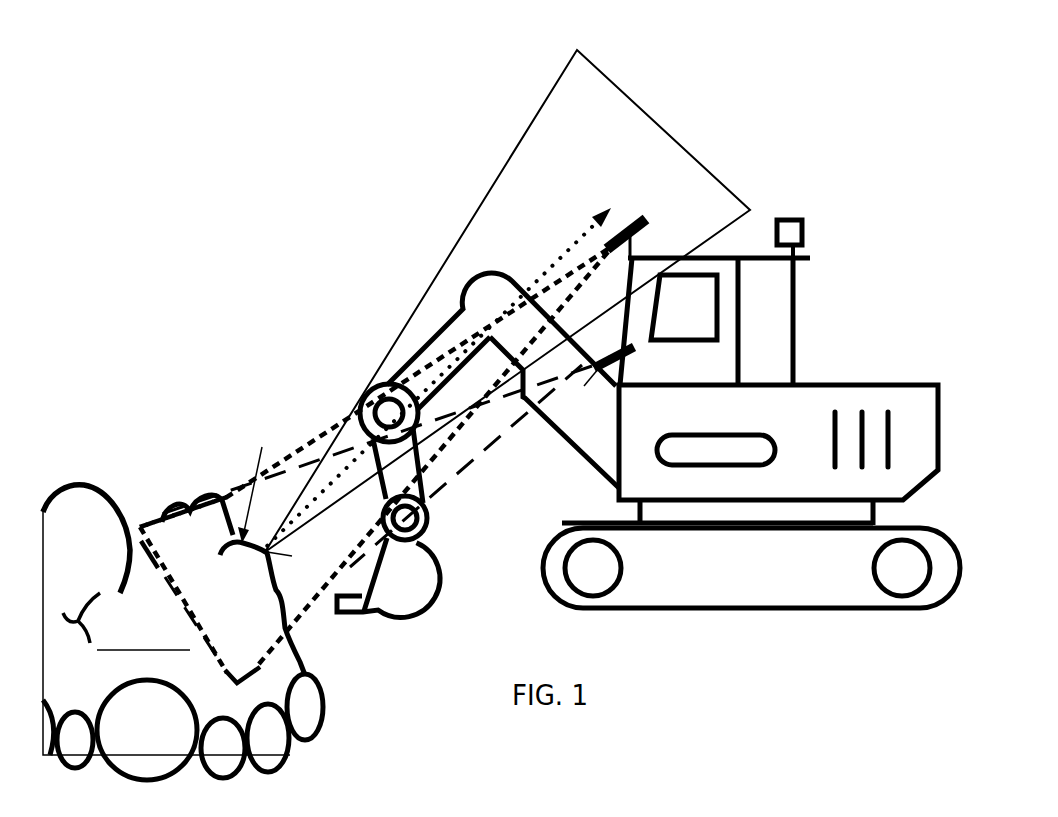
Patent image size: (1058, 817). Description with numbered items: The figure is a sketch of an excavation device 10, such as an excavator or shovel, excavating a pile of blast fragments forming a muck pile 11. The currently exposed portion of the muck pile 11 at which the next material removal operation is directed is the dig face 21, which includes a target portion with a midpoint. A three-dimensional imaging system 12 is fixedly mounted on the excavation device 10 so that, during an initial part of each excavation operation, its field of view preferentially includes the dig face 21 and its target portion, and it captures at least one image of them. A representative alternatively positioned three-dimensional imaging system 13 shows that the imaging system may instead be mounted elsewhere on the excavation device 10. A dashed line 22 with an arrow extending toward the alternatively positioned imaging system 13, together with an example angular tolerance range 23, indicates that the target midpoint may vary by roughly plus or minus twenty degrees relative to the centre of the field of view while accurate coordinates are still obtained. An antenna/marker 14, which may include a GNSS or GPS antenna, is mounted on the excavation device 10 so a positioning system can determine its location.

The excavation device 10 is at (550, 395).
The muck pile 11 is at (90, 487).
The 3D imaging system 12 is at (613, 353).
The alternatively positioned 3D imaging system 13 is at (640, 212).
The antenna/marker 14 is at (798, 218).
The dig face 21 is at (291, 598).
The dashed line 22 is at (577, 242).
The angular tolerance range 23 is at (577, 50).